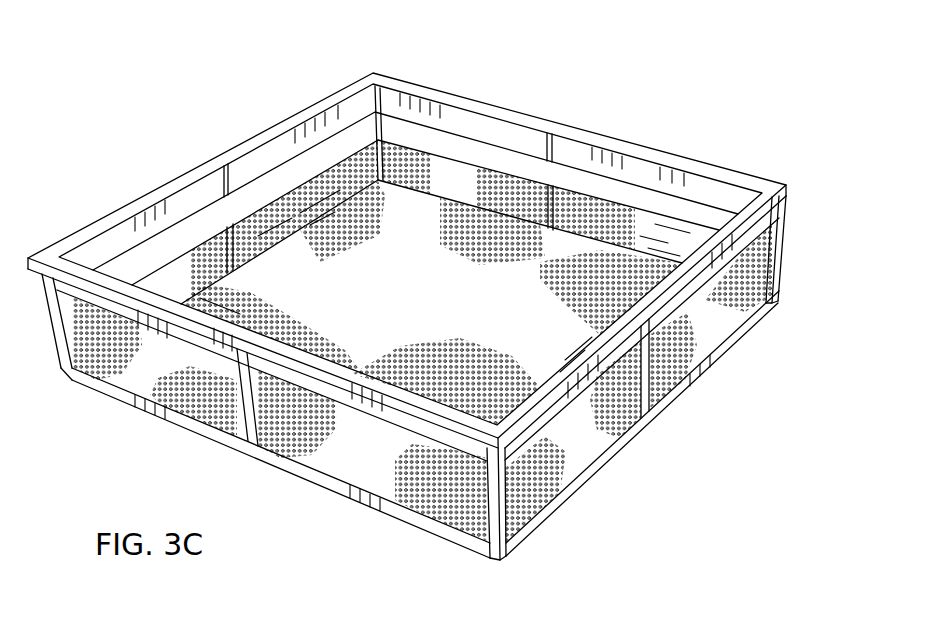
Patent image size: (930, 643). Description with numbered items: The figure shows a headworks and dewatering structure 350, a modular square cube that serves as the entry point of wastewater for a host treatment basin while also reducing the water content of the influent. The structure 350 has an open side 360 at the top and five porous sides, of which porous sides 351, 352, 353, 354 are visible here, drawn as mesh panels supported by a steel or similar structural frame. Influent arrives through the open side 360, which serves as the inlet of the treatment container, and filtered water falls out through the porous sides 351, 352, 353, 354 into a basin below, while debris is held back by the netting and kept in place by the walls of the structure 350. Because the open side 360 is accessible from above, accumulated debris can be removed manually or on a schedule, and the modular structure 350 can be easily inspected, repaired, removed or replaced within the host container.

The headworks and dewatering structure 350 is at (414, 370).
The porous side 351 is at (212, 257).
The porous side 352 is at (502, 187).
The porous side 353 is at (685, 342).
The porous side 354 is at (125, 376).
The open side 360 is at (695, 197).